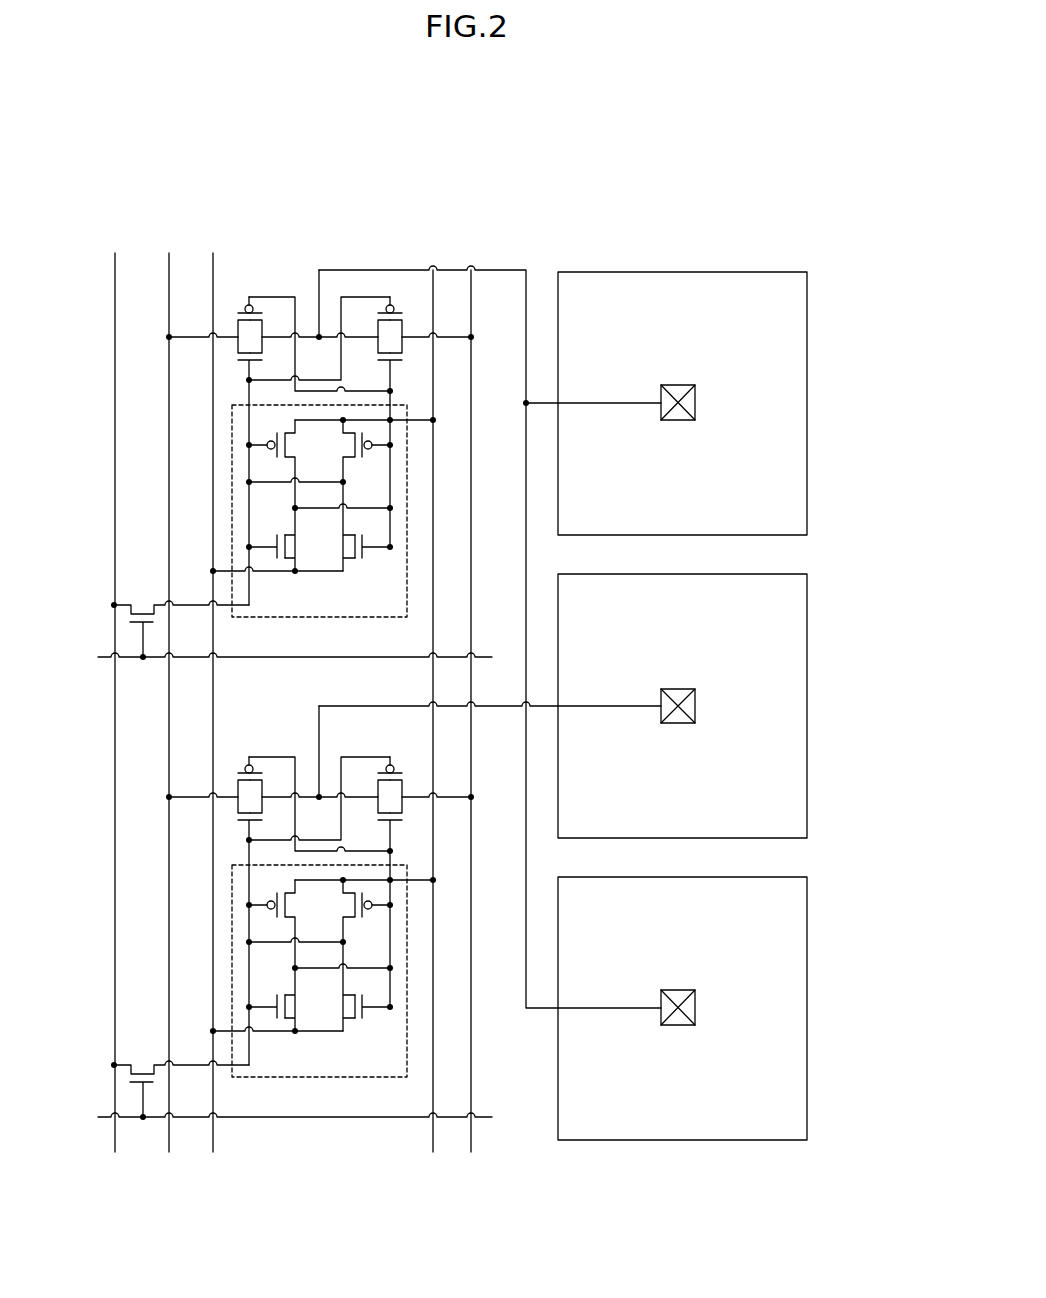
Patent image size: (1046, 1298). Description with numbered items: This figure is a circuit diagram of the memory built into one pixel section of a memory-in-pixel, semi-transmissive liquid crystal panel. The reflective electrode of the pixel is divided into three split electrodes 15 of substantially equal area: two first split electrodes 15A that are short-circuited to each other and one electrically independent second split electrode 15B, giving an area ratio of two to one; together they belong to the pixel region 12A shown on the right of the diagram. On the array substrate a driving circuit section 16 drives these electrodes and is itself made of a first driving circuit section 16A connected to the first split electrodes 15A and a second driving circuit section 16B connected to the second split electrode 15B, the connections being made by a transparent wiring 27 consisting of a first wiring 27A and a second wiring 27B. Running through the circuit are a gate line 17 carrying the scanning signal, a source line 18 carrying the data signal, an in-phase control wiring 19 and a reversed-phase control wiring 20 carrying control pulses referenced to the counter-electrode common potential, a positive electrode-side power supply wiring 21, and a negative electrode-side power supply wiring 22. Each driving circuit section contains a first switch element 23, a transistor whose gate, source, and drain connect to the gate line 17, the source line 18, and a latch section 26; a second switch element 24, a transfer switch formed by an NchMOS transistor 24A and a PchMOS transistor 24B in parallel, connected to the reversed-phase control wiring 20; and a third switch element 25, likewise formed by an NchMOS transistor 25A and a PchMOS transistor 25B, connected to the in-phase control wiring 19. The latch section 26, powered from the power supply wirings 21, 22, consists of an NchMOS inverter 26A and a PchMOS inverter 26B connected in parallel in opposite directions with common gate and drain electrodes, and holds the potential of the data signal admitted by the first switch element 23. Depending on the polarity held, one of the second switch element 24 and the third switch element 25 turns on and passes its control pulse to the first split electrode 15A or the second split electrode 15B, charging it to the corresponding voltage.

The pixel region 12A is at (684, 235).
The split electrode 15 is at (741, 706).
The first split electrode 15A is at (807, 455).
The second split electrode 15B is at (807, 729).
The driving circuit section 16 is at (490, 92).
The first driving circuit section 16A is at (331, 181).
The second driving circuit section 16B is at (384, 697).
The gate line 17 is at (130, 657).
The source line 18 is at (113, 273).
The in-phase control wiring 19 is at (468, 265).
The reversed-phase control wiring 20 is at (167, 273).
The positive electrode-side power supply wiring 21 is at (211, 273).
The negative electrode-side power supply wiring 22 is at (433, 268).
The first switch element 23 is at (130, 610).
The second switch element 24 is at (185, 505).
The NchMOS transistor 24A is at (238, 338).
The PchMOS transistor 24B is at (264, 334).
The third switch element 25 is at (241, 513).
The NchMOS transistor 25A is at (377, 340).
The PchMOS transistor 25B is at (403, 334).
The latch section 26 is at (220, 778).
The NchMOS inverter 26A is at (288, 460).
The PchMOS inverter 26B is at (352, 532).
The wiring 27 is at (619, 637).
The first wiring 27A is at (603, 403).
The second wiring 27B is at (613, 706).